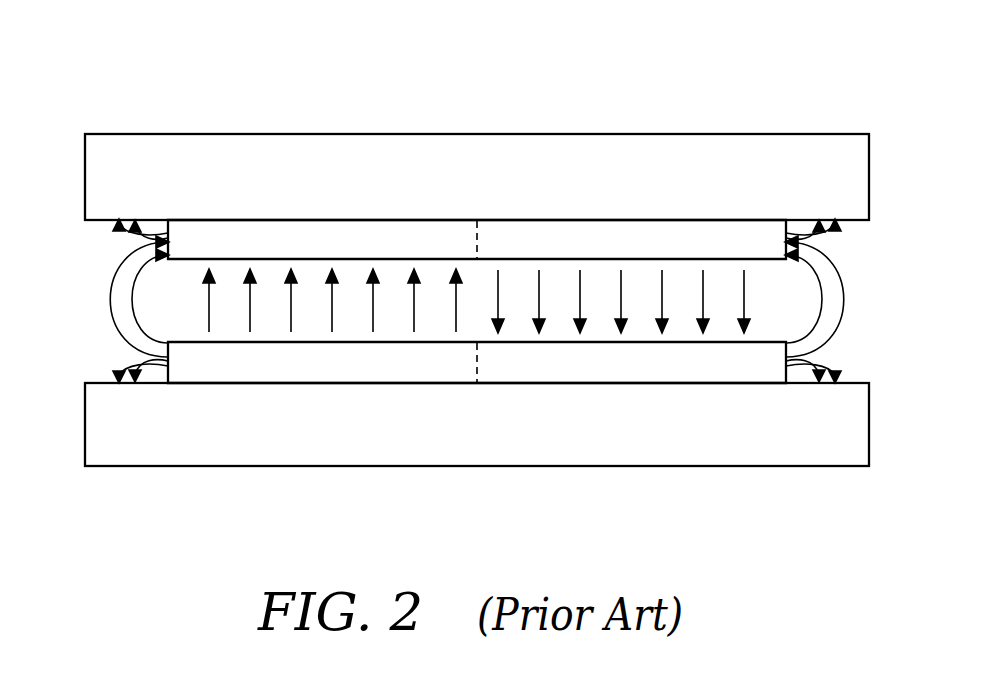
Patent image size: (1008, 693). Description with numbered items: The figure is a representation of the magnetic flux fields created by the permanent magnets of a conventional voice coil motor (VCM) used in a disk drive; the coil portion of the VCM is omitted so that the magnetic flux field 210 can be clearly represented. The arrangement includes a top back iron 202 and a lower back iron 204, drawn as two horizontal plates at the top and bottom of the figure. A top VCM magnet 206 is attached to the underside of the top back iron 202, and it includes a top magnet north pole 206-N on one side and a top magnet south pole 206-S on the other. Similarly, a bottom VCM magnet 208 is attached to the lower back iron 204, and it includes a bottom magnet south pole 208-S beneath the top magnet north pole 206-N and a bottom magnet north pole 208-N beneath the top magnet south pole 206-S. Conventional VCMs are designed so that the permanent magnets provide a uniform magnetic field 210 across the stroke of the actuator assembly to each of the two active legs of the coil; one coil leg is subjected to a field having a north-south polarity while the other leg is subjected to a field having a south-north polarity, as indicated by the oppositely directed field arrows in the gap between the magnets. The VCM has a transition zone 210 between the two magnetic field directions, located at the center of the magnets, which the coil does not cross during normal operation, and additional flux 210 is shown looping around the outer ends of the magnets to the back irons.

The top back iron 202 is at (210, 146).
The lower back iron 204 is at (871, 424).
The top VCM magnet 206 is at (477, 173).
The top magnet north pole 206-N is at (200, 240).
The top magnet south pole 206-S is at (716, 243).
The bottom VCM magnet 208 is at (468, 439).
The bottom magnet south pole 208-S is at (233, 362).
The bottom magnet north pole 208-N is at (752, 363).
The magnetic flux field 210 is at (457, 116).